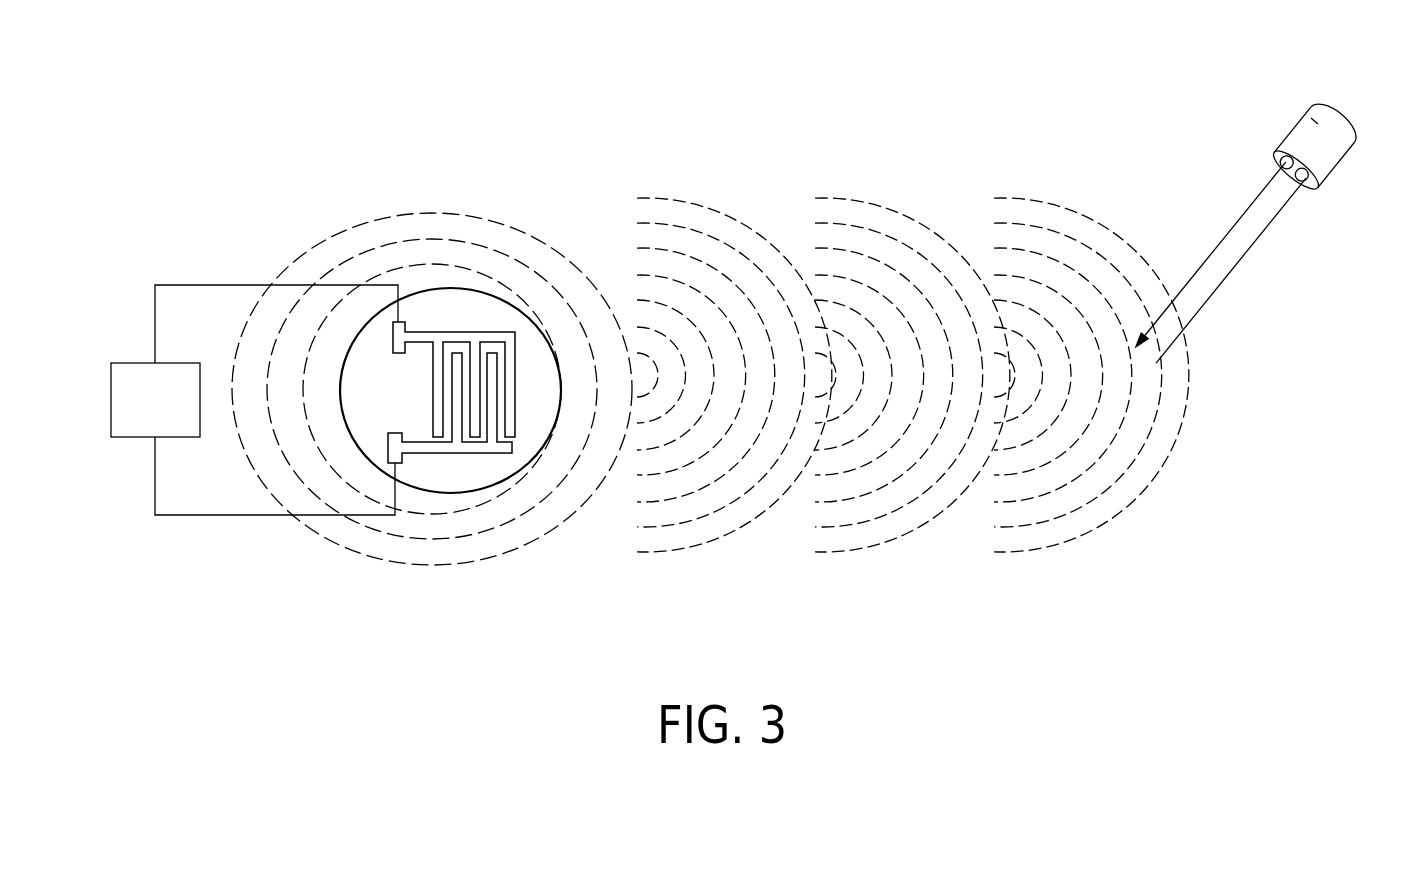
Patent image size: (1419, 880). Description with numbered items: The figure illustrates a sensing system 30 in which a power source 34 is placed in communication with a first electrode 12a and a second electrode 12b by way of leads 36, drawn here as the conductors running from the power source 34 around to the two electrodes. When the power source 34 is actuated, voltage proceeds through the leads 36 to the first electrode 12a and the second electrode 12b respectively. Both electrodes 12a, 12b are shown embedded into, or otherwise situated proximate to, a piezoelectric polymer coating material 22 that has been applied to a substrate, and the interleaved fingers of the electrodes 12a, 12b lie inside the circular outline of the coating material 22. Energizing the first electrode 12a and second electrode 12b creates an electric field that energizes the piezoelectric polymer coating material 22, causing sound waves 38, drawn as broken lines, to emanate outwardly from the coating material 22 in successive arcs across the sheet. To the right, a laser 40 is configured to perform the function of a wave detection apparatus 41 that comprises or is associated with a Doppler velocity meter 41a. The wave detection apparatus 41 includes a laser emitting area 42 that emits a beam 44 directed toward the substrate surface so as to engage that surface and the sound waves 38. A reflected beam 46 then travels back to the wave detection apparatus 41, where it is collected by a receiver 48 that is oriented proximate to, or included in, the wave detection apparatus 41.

The first electrode 12a is at (438, 332).
The second electrode 12b is at (481, 453).
The piezoelectric polymer coating material 22 is at (538, 352).
The sensing system 30 is at (327, 203).
The power source 34 is at (111, 395).
The leads 36 is at (178, 285).
The sound waves 38 is at (490, 253).
The laser 40 is at (1337, 157).
The wave detection apparatus 41 is at (1333, 130).
The Doppler velocity meter 41a is at (1306, 112).
The laser emitting area 42 is at (1273, 157).
The beam 44 is at (1220, 240).
The reflected beam 46 is at (1220, 290).
The receiver 48 is at (1312, 188).